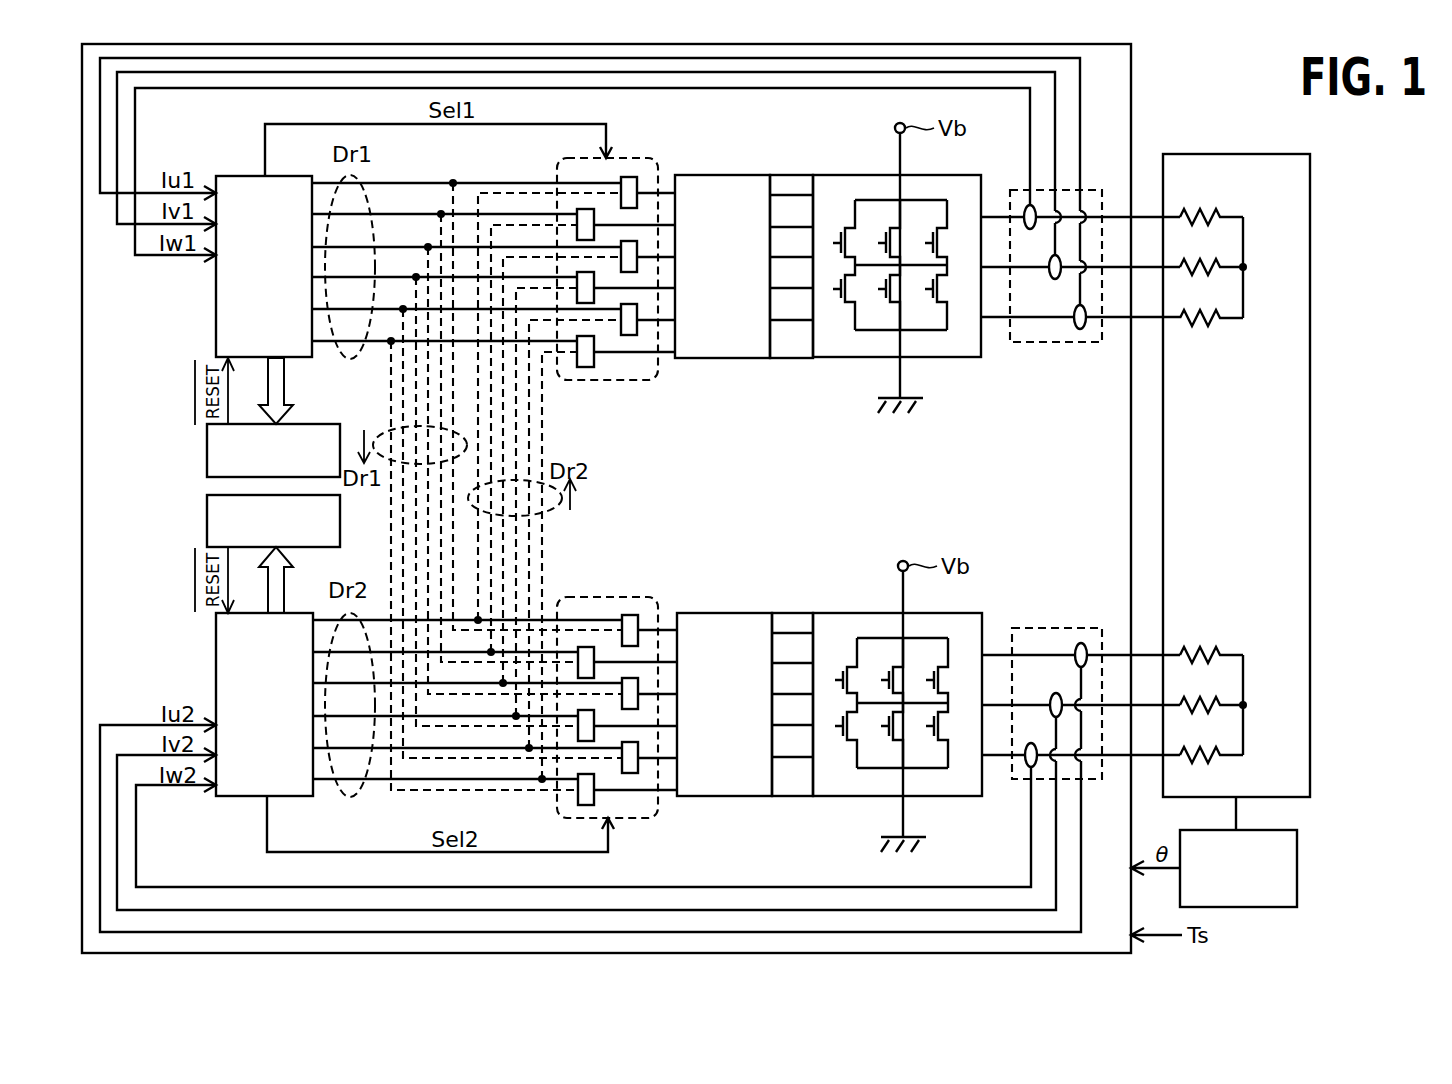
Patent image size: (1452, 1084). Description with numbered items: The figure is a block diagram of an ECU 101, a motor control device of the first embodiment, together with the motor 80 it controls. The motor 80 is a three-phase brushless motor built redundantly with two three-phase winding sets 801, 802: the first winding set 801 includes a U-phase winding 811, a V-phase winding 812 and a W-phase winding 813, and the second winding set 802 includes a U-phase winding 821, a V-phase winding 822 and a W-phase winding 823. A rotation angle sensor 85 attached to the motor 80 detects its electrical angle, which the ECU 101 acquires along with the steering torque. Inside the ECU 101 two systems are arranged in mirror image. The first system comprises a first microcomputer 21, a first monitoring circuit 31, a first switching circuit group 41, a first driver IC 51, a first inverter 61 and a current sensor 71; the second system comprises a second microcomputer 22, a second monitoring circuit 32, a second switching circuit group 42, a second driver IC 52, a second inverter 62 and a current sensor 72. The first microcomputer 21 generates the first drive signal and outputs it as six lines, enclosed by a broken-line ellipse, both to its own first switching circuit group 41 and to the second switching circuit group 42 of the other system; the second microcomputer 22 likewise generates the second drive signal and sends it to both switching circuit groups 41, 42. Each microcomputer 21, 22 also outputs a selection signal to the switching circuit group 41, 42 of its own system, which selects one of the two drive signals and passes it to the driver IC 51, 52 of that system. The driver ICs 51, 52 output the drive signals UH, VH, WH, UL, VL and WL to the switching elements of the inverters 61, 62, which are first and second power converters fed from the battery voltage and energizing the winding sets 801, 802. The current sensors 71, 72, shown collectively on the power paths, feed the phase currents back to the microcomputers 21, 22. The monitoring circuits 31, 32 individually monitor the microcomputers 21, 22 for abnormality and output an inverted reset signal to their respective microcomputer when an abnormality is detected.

The ECU 101 is at (1131, 87).
The first microcomputer 21 is at (246, 176).
The second microcomputer 22 is at (243, 796).
The first monitoring circuit 31 is at (207, 452).
The second monitoring circuit 32 is at (207, 522).
The first switching circuit group 41 is at (607, 380).
The second switching circuit group 42 is at (608, 597).
The first driver IC 51 is at (725, 358).
The second driver IC 52 is at (722, 613).
The first inverter 61 is at (857, 175).
The second inverter 62 is at (860, 613).
The current sensor 71 is at (1050, 342).
The current sensor 72 is at (1053, 628).
The motor 80 is at (1245, 154).
The first winding set 801 is at (1237, 343).
The second winding set 802 is at (1223, 627).
The U-phase winding 811 is at (1212, 208).
The V-phase winding 812 is at (1222, 265).
The W-phase winding 813 is at (1222, 312).
The U-phase winding 821 is at (1215, 647).
The V-phase winding 822 is at (1225, 703).
The W-phase winding 823 is at (1222, 752).
The rotation angle sensor 85 is at (1262, 907).